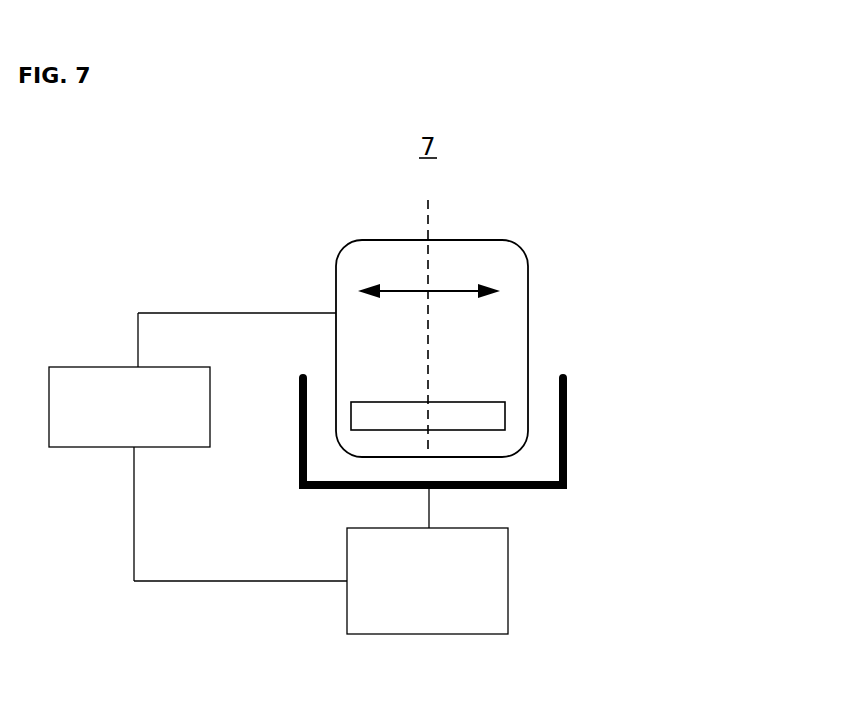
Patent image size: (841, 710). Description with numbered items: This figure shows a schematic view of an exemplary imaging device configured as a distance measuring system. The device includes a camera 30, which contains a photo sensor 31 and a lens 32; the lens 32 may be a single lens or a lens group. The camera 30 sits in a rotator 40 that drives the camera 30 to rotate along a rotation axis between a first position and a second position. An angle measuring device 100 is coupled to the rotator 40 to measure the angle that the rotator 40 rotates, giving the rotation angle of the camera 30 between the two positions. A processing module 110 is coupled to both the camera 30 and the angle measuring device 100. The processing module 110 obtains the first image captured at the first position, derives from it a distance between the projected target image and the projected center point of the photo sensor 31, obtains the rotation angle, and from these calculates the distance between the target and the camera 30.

The camera 30 is at (527, 298).
The photo sensor 31 is at (482, 402).
The lens 32 is at (462, 291).
The rotator 40 is at (568, 474).
The angle measuring device 100 is at (508, 577).
The processing module 110 is at (73, 367).